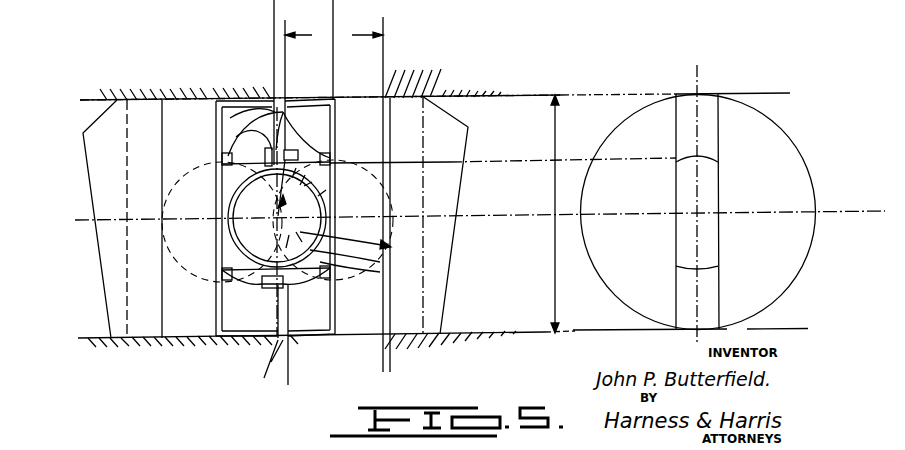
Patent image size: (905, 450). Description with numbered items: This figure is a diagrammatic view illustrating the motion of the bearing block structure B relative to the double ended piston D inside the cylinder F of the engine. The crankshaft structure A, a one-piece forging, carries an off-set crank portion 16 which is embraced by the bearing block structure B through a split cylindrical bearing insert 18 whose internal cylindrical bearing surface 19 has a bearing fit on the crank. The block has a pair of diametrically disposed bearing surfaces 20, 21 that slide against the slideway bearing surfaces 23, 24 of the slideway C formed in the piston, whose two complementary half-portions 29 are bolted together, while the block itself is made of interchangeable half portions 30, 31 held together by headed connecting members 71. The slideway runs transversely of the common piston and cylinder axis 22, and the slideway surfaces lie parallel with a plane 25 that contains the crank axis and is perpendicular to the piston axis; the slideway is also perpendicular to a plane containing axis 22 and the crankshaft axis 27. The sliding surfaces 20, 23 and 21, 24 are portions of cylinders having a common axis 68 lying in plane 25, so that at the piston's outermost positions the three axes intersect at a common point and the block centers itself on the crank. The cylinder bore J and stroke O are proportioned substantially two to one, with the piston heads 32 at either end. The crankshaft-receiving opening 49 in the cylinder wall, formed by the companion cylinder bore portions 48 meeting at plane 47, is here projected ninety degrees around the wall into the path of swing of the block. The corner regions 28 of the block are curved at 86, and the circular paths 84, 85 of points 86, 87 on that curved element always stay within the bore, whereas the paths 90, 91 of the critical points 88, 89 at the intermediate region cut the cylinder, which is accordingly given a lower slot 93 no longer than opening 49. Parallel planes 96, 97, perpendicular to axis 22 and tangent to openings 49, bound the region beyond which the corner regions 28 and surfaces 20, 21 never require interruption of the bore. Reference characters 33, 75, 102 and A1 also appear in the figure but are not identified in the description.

The crank portion 16 is at (236, 226).
The bearing insert 18 is at (236, 194).
The internal cylindrical bearing surface 19 is at (238, 210).
The bearing surface 20 is at (222, 204).
The bearing surface 21 is at (336, 212).
The piston and cylinder axis 22 is at (498, 223).
The slideway bearing surface 23 is at (228, 100).
The slideway bearing surface 24 is at (335, 299).
The plane 25 is at (250, 356).
The crankshaft axis 27 is at (356, 236).
The corner regions 28 is at (222, 157).
The piston half-portions 29 is at (114, 122).
The bearing block half portion 30 is at (210, 268).
The bearing block half portion 31 is at (388, 263).
The piston heads 32 is at (99, 232).
The partition wall 33 is at (115, 294).
The plane 47 is at (333, 22).
The cylinder bore portions 48 is at (264, 99).
The crankshaft-receiving openings 49 is at (389, 152).
The common axis 68 is at (273, 21).
The headed connecting members 71 is at (263, 157).
The right guide line 75 is at (386, 181).
The circular path 84 is at (240, 118).
The circular path 85 is at (255, 134).
The curved point 86 is at (216, 167).
The point 87 is at (212, 172).
The critical point 88 is at (238, 136).
The critical point 89 is at (286, 140).
The circular path 90 is at (277, 122).
The circular path 91 is at (286, 118).
The lower opening 93 is at (392, 358).
The plane 96 is at (289, 372).
The plane 97 is at (383, 358).
The lower hatched surface 102 is at (393, 343).
The cylinder F is at (112, 124).
The crankshaft structure A is at (276, 284).
The position A1 is at (163, 270).
The bearing block structure B is at (360, 259).
The slideway C is at (212, 308).
The double ended piston D is at (446, 277).
The bore J is at (555, 214).
The stroke O is at (304, 209).